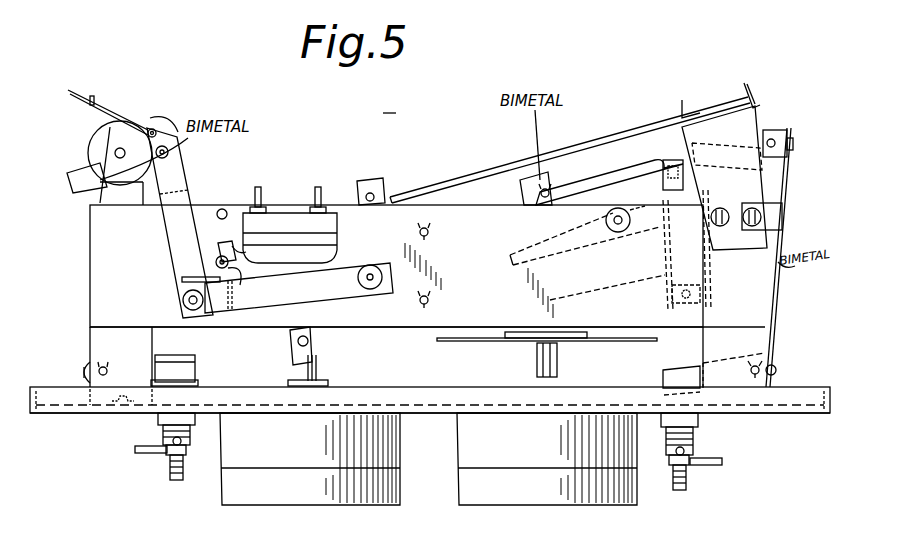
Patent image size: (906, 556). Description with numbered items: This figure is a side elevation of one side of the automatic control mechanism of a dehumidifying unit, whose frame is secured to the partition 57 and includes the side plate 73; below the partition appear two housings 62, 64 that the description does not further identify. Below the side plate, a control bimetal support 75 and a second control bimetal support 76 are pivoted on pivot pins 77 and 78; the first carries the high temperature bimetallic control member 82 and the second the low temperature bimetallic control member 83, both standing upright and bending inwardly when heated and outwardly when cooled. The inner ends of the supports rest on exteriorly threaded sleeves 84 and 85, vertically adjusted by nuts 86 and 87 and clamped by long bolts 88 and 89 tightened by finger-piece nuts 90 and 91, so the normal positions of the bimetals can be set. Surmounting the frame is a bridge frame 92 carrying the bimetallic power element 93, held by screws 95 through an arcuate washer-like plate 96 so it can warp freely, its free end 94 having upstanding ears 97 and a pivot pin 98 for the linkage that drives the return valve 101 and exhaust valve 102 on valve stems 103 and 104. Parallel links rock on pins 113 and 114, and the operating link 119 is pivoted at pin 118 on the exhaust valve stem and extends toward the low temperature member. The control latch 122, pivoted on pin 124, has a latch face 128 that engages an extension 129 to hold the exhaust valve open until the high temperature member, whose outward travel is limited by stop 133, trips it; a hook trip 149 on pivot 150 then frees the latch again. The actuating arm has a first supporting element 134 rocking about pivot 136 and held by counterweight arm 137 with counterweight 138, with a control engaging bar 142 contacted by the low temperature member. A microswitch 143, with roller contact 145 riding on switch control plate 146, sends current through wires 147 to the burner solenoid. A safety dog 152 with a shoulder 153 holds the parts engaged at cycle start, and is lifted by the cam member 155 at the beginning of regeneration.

The partition 57 is at (790, 398).
The housing 62 is at (268, 496).
The housing 64 is at (598, 495).
The side plate 73 is at (270, 318).
The control bimetal support 75 is at (700, 366).
The second control bimetal support 76 is at (158, 358).
The pivot pin 77 is at (758, 375).
The pivot pin 78 is at (128, 355).
The high temperature bimetallic control member 82 is at (772, 352).
The low temperature bimetallic control member 83 is at (88, 366).
The exteriorly threaded sleeve 84 is at (693, 447).
The exteriorly threaded sleeve 85 is at (163, 434).
The nut 86 is at (698, 420).
The nut 87 is at (195, 418).
The long bolt 88 is at (679, 490).
The long bolt 89 is at (170, 473).
The nut 90 is at (710, 466).
The nut 91 is at (148, 453).
The bridge frame 92 is at (750, 124).
The bimetallic power element 93 is at (580, 128).
The free end 94 is at (395, 198).
The screw 95 is at (712, 100).
The arcuate washer-like plate 96 is at (687, 100).
The upstanding ear 97 is at (362, 180).
The pivot pin 98 is at (350, 197).
The return valve 101 is at (382, 403).
The exhaust valve 102 is at (480, 342).
The valve stem 103 is at (316, 355).
The valve stem 104 is at (557, 360).
The pin 113 is at (430, 303).
The pin 114 is at (430, 235).
The pin 118 is at (543, 188).
The operating link 119 is at (505, 195).
The control latch 122 is at (607, 289).
The pin 124 is at (700, 297).
The latch face 128 is at (665, 185).
The extension 129 is at (635, 162).
The stop 133 is at (765, 218).
The first supporting element 134 is at (173, 235).
The pivot 136 is at (182, 302).
The counterweight arm 137 is at (345, 275).
The counterweight 138 is at (366, 290).
The control engaging bar 142 is at (72, 185).
The microswitch 143 is at (325, 226).
The roller contact 145 is at (249, 273).
The switch control plate 146 is at (180, 279).
The wires 147 is at (318, 190).
The hook trip 149 is at (585, 236).
The pivot 150 is at (610, 232).
The safety dog 152 is at (78, 90).
The shoulder 153 is at (105, 118).
The cam member 155 is at (88, 148).